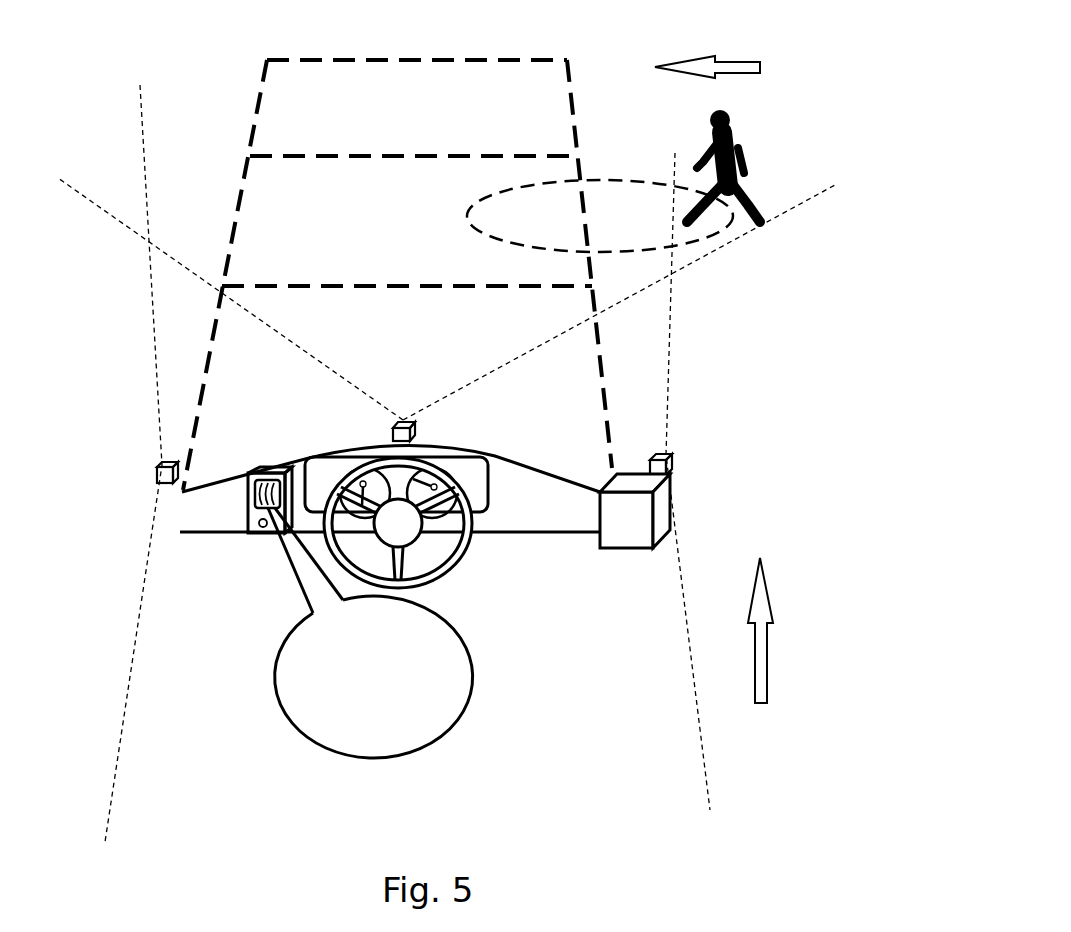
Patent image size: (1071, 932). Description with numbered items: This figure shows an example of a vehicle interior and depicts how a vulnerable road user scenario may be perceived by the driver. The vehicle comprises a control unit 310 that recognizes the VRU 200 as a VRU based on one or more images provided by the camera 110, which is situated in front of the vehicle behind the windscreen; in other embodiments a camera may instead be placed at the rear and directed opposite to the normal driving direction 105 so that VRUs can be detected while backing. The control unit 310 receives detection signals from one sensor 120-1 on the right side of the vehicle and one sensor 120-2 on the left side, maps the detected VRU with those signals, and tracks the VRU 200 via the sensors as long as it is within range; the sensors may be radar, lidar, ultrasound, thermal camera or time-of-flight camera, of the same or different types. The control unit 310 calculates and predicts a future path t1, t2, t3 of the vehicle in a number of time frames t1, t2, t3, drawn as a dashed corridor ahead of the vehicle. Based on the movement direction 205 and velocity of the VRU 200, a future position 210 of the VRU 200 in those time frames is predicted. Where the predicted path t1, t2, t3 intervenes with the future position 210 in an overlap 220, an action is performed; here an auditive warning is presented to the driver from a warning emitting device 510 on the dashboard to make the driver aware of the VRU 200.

The normal driving direction 105 is at (783, 630).
The camera 110 is at (415, 426).
The sensor 120-1 is at (672, 463).
The sensor 120-2 is at (156, 469).
The VRU 200 is at (727, 108).
The movement direction 205 is at (707, 53).
The future position 210 is at (645, 232).
The overlap 220 is at (558, 213).
The control unit 310 is at (635, 511).
The warning emitting device 510 is at (258, 533).
The future path time frame t1 is at (243, 352).
The future path time frame t2 is at (262, 213).
The future path time frame t3 is at (283, 83).